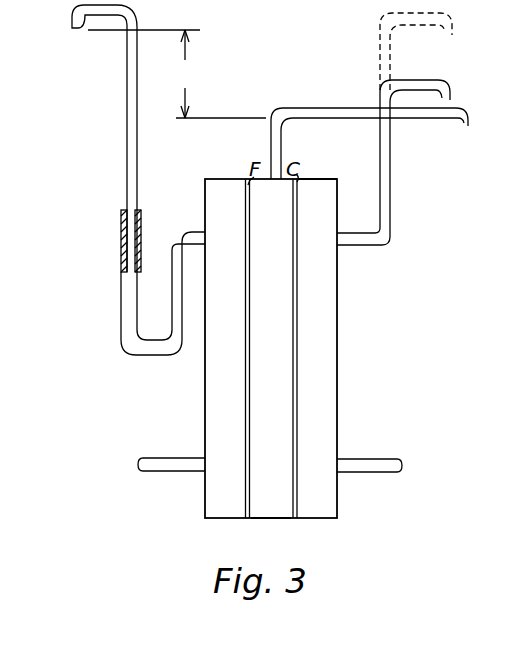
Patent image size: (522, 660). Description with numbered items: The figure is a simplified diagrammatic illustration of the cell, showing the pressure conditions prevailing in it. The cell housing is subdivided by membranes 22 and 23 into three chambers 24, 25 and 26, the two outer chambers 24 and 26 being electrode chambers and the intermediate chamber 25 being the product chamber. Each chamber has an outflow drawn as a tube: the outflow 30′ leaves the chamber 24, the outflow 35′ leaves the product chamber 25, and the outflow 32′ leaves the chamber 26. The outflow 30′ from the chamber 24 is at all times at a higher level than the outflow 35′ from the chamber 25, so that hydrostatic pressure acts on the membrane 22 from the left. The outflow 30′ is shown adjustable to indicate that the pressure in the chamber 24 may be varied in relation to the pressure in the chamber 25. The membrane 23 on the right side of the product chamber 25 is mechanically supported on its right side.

The membrane 22 is at (247, 430).
The membrane 23 is at (298, 441).
The chamber 24 is at (222, 385).
The product chamber 25 is at (278, 503).
The chamber 26 is at (320, 361).
The outflow 30′ is at (82, 29).
The outflow 32′ is at (452, 99).
The outflow 35′ is at (466, 126).